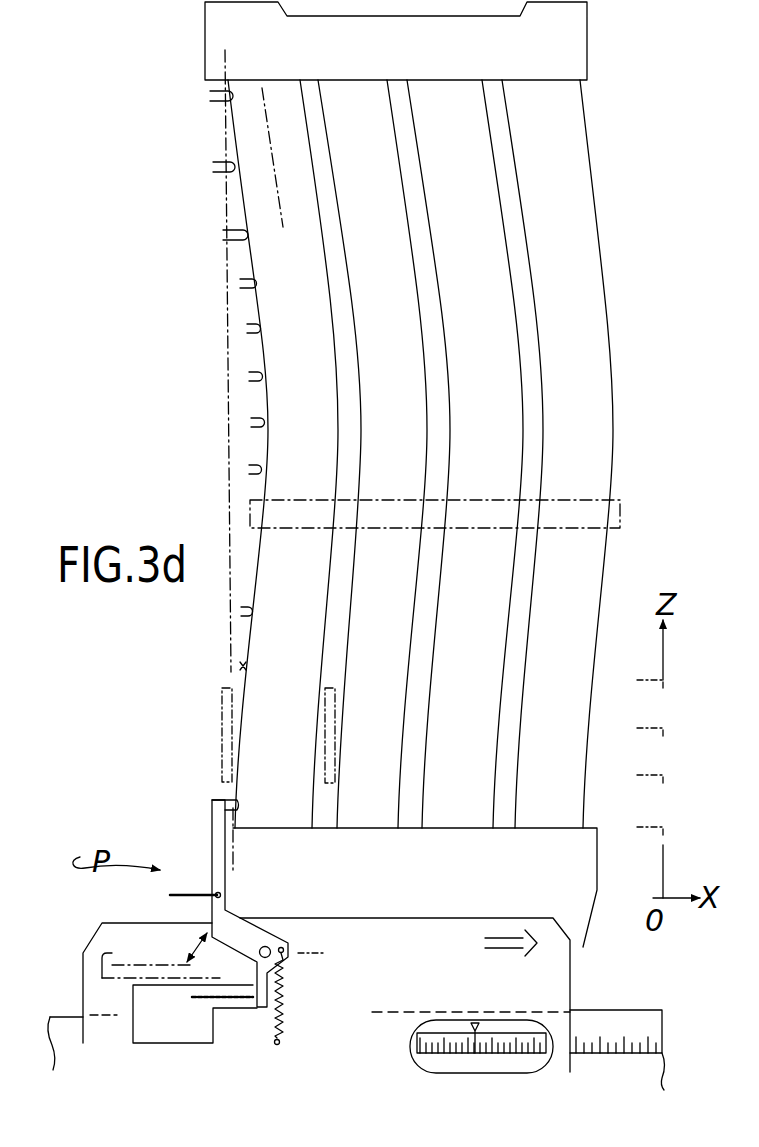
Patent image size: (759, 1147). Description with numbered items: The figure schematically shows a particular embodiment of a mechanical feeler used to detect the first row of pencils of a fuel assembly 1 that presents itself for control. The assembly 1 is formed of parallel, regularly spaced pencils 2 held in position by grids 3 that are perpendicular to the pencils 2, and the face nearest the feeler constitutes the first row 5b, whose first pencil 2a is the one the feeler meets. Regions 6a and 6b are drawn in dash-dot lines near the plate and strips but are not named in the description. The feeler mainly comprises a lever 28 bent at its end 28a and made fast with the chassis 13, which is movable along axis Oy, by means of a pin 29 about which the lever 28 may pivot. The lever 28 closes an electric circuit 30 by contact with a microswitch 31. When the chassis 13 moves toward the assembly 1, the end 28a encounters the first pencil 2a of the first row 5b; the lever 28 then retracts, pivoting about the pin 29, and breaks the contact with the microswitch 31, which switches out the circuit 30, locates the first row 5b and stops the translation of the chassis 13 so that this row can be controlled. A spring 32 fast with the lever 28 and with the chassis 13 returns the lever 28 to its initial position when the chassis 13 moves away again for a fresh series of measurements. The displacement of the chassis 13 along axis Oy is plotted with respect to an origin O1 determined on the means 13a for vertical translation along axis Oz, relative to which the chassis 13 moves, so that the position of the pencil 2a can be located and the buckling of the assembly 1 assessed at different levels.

The fuel assembly 1 is at (203, 274).
The pencils 2 is at (372, 169).
The first pencil 2a is at (258, 308).
The grids 3 is at (620, 502).
The first row of pencils 5b is at (267, 122).
The stop 6a is at (222, 700).
The stop 6b is at (330, 688).
The lever 28 is at (208, 850).
The end of the lever 28a is at (223, 804).
The pin 29 is at (268, 947).
The electric circuit 30 is at (203, 995).
The microswitch 31 is at (188, 1023).
The spring 32 is at (278, 1005).
The chassis 13 is at (358, 1077).
The means for vertical translation 13a is at (628, 1089).
The origin O1 is at (478, 1050).